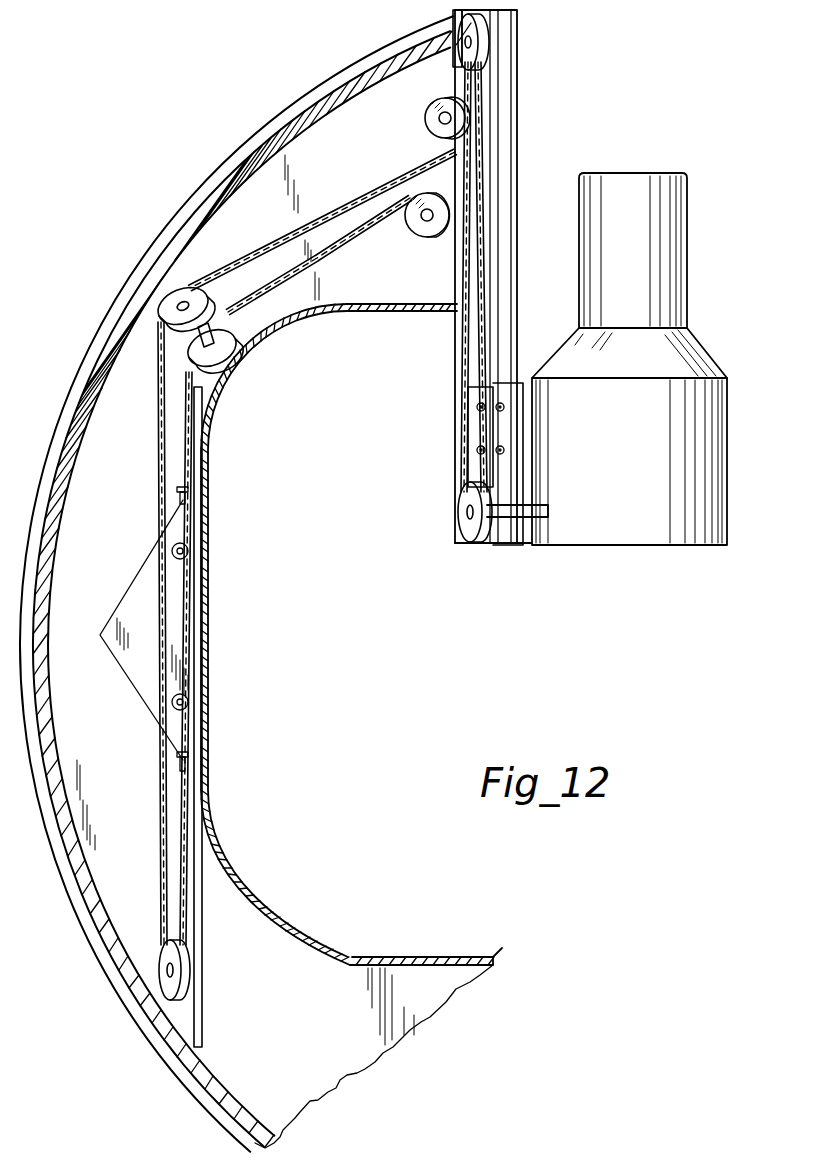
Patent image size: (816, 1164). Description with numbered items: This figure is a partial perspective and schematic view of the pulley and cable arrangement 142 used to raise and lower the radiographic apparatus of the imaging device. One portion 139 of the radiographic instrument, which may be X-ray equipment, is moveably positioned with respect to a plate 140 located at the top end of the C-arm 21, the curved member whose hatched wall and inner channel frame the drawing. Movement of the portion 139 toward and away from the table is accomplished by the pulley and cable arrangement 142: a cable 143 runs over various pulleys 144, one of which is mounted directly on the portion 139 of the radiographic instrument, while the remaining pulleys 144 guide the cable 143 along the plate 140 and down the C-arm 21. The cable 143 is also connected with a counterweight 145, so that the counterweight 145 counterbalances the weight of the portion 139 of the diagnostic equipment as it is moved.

The C-arm 21 is at (343, 986).
The portion of the radiographic instrument 139 is at (692, 300).
The plate 140 is at (503, 113).
The pulley and cable arrangement 142 is at (197, 413).
The cable 143 is at (158, 492).
The pulleys 144 is at (456, 30).
The counterweight 145 is at (180, 613).